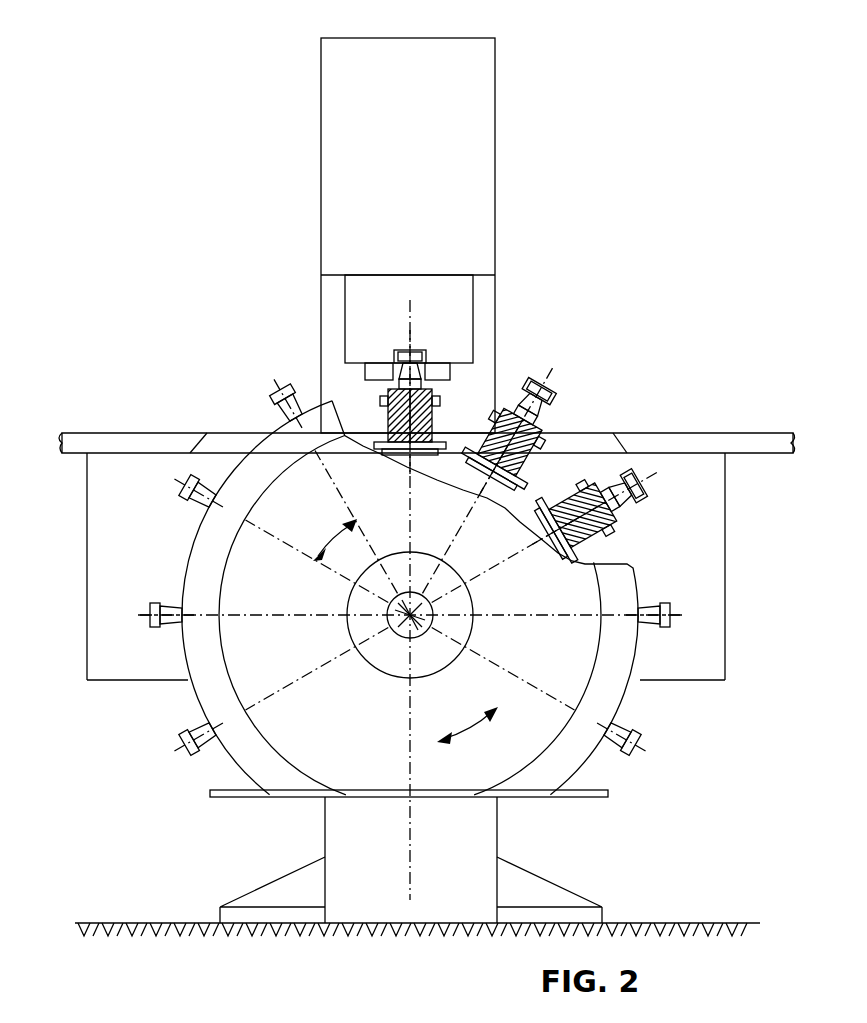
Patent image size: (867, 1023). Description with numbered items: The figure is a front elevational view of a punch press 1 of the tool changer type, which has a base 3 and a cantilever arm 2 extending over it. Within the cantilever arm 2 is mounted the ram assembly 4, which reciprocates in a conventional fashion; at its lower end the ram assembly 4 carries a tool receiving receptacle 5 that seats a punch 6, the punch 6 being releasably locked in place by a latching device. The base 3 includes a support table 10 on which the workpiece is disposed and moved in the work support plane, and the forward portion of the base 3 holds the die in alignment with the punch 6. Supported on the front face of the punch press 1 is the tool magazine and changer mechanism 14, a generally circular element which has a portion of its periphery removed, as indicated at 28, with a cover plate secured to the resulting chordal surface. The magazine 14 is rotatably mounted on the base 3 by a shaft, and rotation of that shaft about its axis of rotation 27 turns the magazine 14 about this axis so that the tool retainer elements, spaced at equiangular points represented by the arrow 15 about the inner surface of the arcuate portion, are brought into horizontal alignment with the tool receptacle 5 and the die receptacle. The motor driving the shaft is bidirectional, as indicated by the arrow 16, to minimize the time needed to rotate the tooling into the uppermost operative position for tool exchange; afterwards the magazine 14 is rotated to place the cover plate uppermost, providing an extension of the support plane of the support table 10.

The punch press 1 is at (502, 90).
The cantilever arm 2 is at (474, 202).
The base 3 is at (476, 843).
The ram assembly 4 is at (440, 373).
The tool receiving receptacle 5 is at (459, 349).
The punch 6 is at (422, 330).
The support table 10 is at (750, 437).
The tool magazine and changer mechanism 14 is at (665, 556).
The arrow 15 is at (334, 538).
The arrow 16 is at (470, 734).
The axis of rotation 27 is at (472, 648).
The removed portion 28 is at (304, 795).